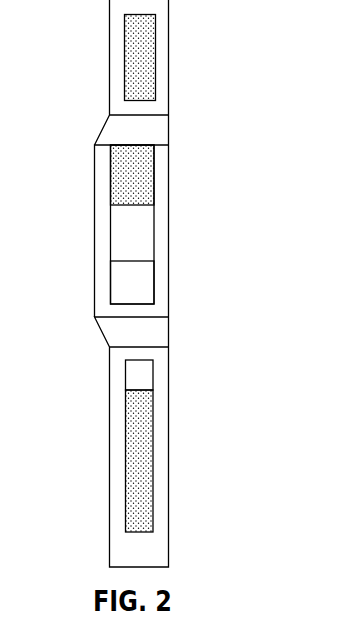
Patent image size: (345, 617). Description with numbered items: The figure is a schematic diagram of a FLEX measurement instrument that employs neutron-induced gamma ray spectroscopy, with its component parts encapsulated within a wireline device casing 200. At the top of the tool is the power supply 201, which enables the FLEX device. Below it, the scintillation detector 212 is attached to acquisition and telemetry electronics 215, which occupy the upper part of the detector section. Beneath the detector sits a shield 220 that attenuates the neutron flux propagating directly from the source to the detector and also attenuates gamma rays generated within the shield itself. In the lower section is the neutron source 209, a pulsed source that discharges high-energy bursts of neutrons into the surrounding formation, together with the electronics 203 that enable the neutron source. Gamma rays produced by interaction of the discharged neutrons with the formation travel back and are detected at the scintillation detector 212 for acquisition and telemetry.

The wireline device casing 200 is at (164, 45).
The power supply 201 is at (138, 58).
The scintillation detector 212 is at (121, 240).
The acquisition and telemetry electronics 215 is at (121, 184).
The shield 220 is at (121, 291).
The neutron source 209 is at (130, 381).
The electronics 203 is at (131, 478).